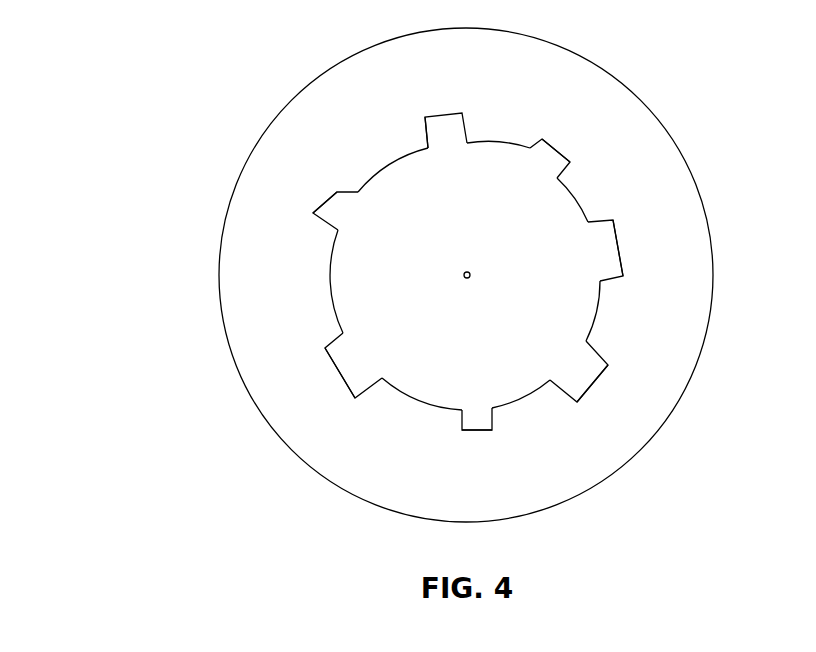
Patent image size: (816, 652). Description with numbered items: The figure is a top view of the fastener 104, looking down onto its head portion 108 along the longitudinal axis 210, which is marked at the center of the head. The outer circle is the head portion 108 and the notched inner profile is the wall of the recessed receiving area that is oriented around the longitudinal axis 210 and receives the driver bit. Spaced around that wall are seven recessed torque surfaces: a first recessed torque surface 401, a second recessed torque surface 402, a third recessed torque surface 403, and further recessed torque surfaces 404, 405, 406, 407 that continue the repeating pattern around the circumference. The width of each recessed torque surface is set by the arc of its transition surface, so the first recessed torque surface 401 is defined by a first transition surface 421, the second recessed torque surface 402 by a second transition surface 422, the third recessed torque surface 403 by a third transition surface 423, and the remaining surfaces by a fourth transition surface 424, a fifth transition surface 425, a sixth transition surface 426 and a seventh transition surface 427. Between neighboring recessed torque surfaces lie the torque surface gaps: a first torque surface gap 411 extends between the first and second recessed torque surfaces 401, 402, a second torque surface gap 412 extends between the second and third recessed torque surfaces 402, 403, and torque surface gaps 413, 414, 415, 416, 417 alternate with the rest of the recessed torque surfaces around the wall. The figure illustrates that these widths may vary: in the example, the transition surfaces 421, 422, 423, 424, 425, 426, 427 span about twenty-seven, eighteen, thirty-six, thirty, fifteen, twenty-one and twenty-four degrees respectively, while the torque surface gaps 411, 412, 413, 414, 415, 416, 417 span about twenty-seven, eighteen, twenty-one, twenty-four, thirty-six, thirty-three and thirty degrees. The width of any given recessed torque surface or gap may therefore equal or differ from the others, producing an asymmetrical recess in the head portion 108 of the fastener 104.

The fastener 104 is at (203, 46).
The head portion 108 is at (627, 93).
The longitudinal axis 210 is at (462, 272).
The first recessed torque surface 401 is at (450, 125).
The second recessed torque surface 402 is at (541, 140).
The third recessed torque surface 403 is at (617, 233).
The fourth recessed torque surface 404 is at (600, 365).
The fifth recessed torque surface 405 is at (481, 430).
The sixth recessed torque surface 406 is at (330, 348).
The seventh recessed torque surface 407 is at (323, 222).
The first torque surface gap 411 is at (497, 142).
The second torque surface gap 412 is at (585, 193).
The third torque surface gap 413 is at (605, 318).
The fourth torque surface gap 414 is at (522, 400).
The fifth torque surface gap 415 is at (412, 405).
The sixth torque surface gap 416 is at (330, 278).
The seventh torque surface gap 417 is at (392, 165).
The first transition surface 421 is at (433, 118).
The second transition surface 422 is at (566, 150).
The third transition surface 423 is at (622, 260).
The fourth transition surface 424 is at (581, 393).
The fifth transition surface 425 is at (471, 425).
The sixth transition surface 426 is at (342, 357).
The seventh transition surface 427 is at (323, 218).